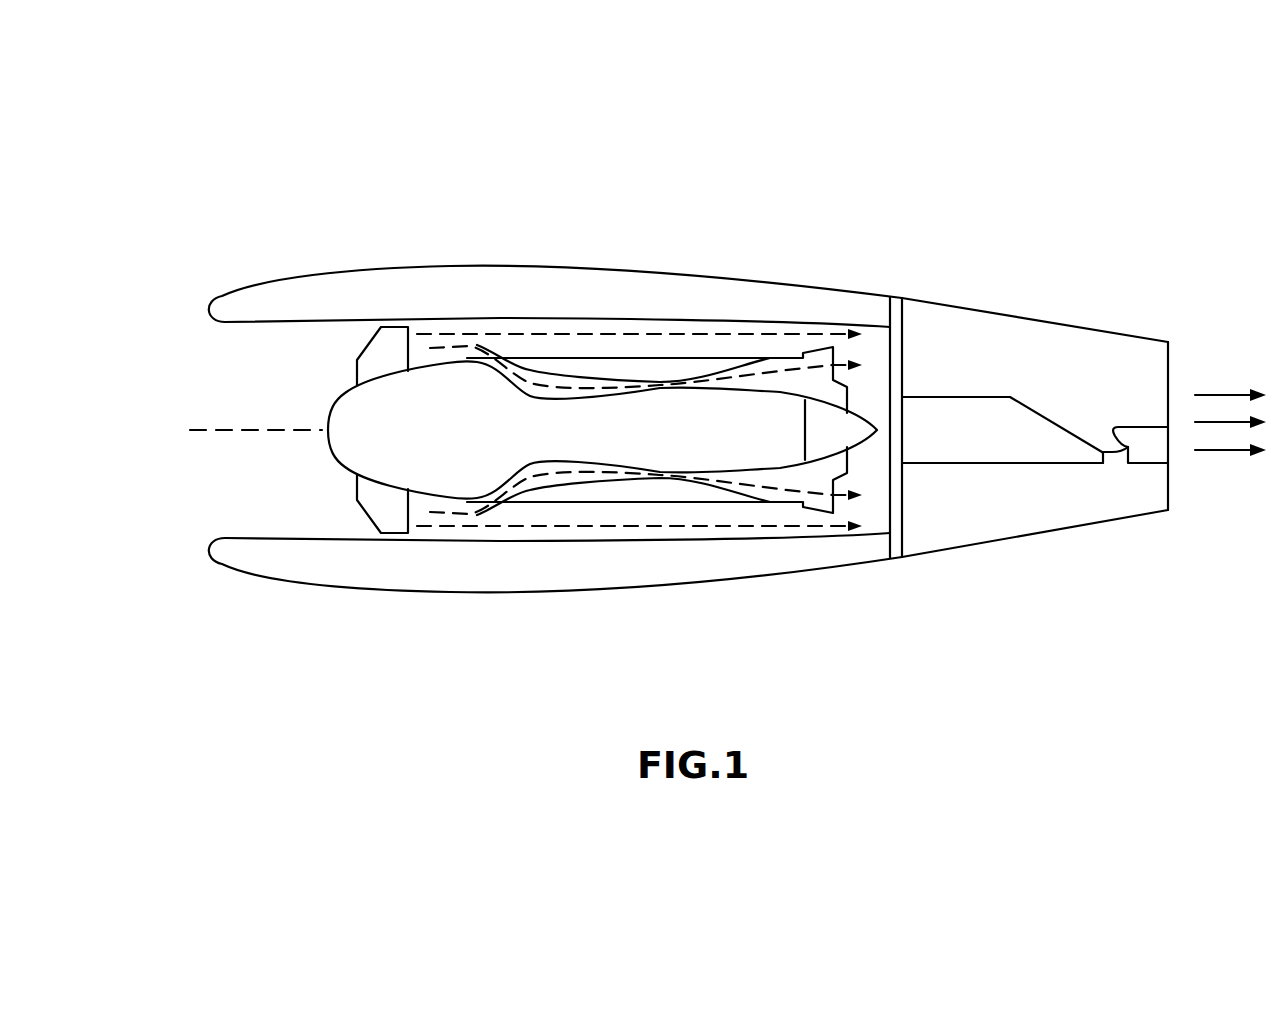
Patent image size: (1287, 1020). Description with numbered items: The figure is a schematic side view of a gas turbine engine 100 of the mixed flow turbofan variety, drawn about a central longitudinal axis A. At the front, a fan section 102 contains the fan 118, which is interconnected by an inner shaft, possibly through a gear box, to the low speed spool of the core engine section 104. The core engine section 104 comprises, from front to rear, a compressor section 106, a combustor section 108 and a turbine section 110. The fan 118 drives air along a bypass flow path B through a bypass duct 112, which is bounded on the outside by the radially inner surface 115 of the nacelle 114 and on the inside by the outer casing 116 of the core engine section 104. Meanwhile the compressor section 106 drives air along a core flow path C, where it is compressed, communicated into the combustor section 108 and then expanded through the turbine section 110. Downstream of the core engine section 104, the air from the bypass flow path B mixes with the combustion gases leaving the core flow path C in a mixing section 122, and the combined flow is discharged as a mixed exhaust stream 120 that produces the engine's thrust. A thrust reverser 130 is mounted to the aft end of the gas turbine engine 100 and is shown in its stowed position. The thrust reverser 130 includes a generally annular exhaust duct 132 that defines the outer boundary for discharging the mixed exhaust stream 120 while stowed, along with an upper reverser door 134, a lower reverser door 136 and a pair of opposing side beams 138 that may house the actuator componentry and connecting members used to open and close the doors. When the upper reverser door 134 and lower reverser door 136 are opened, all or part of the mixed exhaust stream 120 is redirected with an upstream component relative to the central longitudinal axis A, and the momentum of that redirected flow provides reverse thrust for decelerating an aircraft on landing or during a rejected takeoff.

The gas turbine engine 100 is at (221, 200).
The fan section 102 is at (317, 360).
The core engine section 104 is at (503, 407).
The compressor section 106 is at (535, 354).
The combustor section 108 is at (662, 356).
The turbine section 110 is at (773, 333).
The bypass duct 112 is at (534, 528).
The nacelle 114 is at (345, 567).
The radially inner surface 115 is at (600, 540).
The outer casing 116 is at (653, 497).
The fan 118 is at (366, 511).
The mixed exhaust stream 120 is at (1223, 395).
The mixing section 122 is at (873, 351).
The thrust reverser 130 is at (1038, 379).
The exhaust duct 132 is at (1162, 510).
The upper reverser door 134 is at (1048, 325).
The lower reverser door 136 is at (995, 543).
The side beams 138 is at (1085, 457).
The central longitudinal axis A is at (218, 432).
The bypass flow path B is at (467, 523).
The core flow path C is at (797, 483).